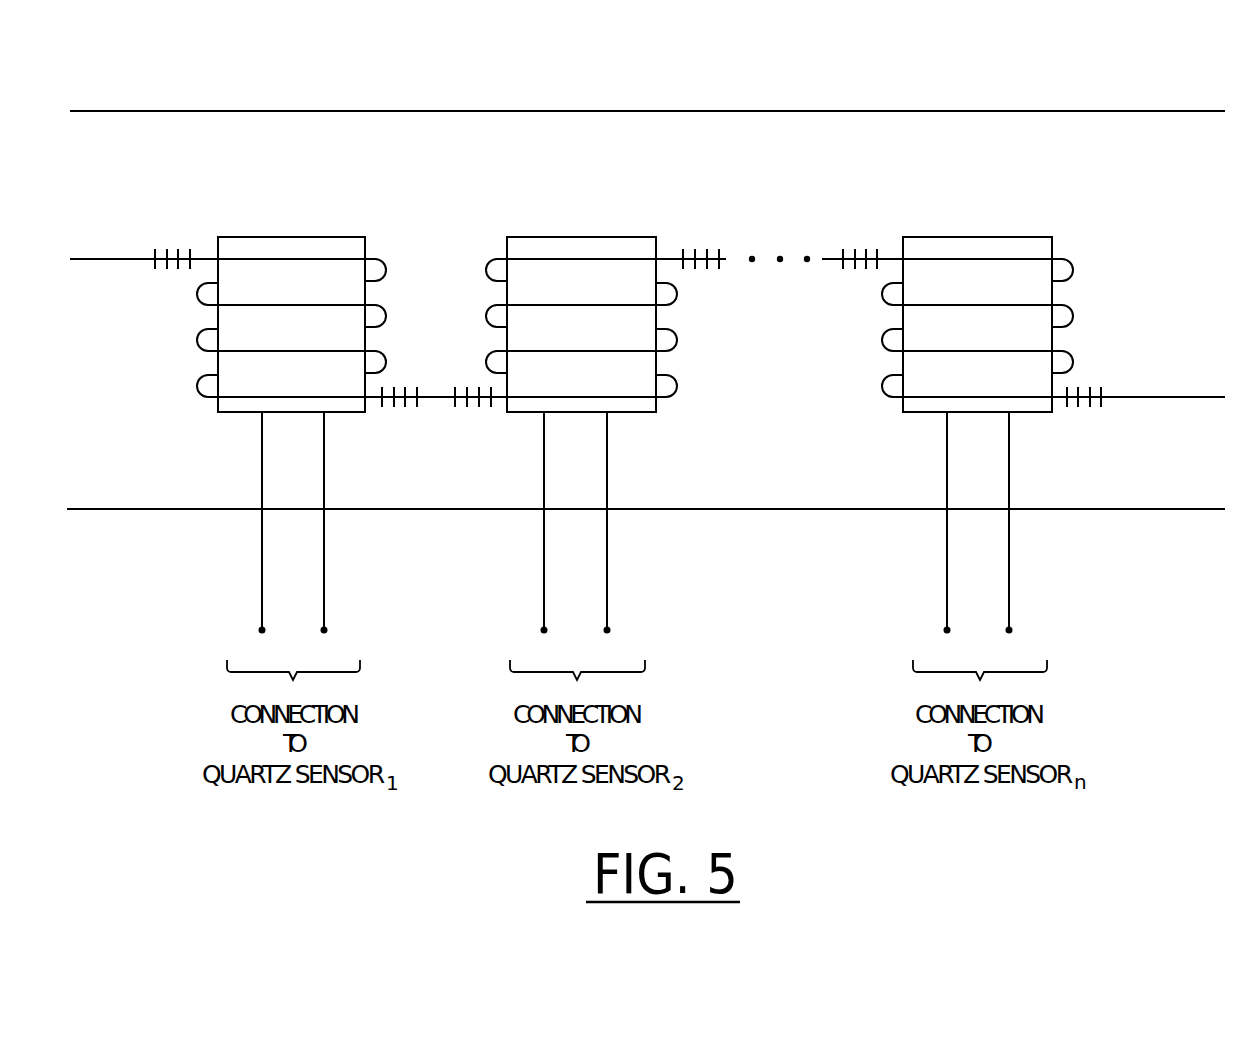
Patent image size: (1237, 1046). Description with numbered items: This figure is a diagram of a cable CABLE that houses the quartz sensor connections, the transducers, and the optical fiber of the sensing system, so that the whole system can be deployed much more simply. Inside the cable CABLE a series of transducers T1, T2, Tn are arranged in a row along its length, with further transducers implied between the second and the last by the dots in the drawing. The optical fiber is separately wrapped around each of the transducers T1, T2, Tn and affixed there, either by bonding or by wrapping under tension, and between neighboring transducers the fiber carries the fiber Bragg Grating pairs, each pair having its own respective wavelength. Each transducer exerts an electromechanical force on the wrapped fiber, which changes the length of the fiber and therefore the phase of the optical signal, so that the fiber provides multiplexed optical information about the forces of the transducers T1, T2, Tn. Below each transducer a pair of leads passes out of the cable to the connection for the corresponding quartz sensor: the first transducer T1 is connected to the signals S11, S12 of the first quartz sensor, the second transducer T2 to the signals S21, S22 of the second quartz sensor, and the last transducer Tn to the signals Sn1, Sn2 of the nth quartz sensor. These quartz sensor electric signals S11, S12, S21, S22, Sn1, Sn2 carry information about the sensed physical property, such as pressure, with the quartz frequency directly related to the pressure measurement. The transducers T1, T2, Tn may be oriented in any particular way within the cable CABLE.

The cable CABLE is at (1011, 128).
The transducer T1 is at (350, 242).
The transducer T2 is at (542, 247).
The transducer Tn is at (1033, 245).
The quartz sensor electric signal S11 is at (239, 530).
The quartz sensor electric signal S12 is at (350, 530).
The quartz sensor electric signal S21 is at (522, 530).
The quartz sensor electric signal S22 is at (632, 530).
The quartz sensor electric signal Sn1 is at (924, 530).
The quartz sensor electric signal Sn2 is at (1036, 530).